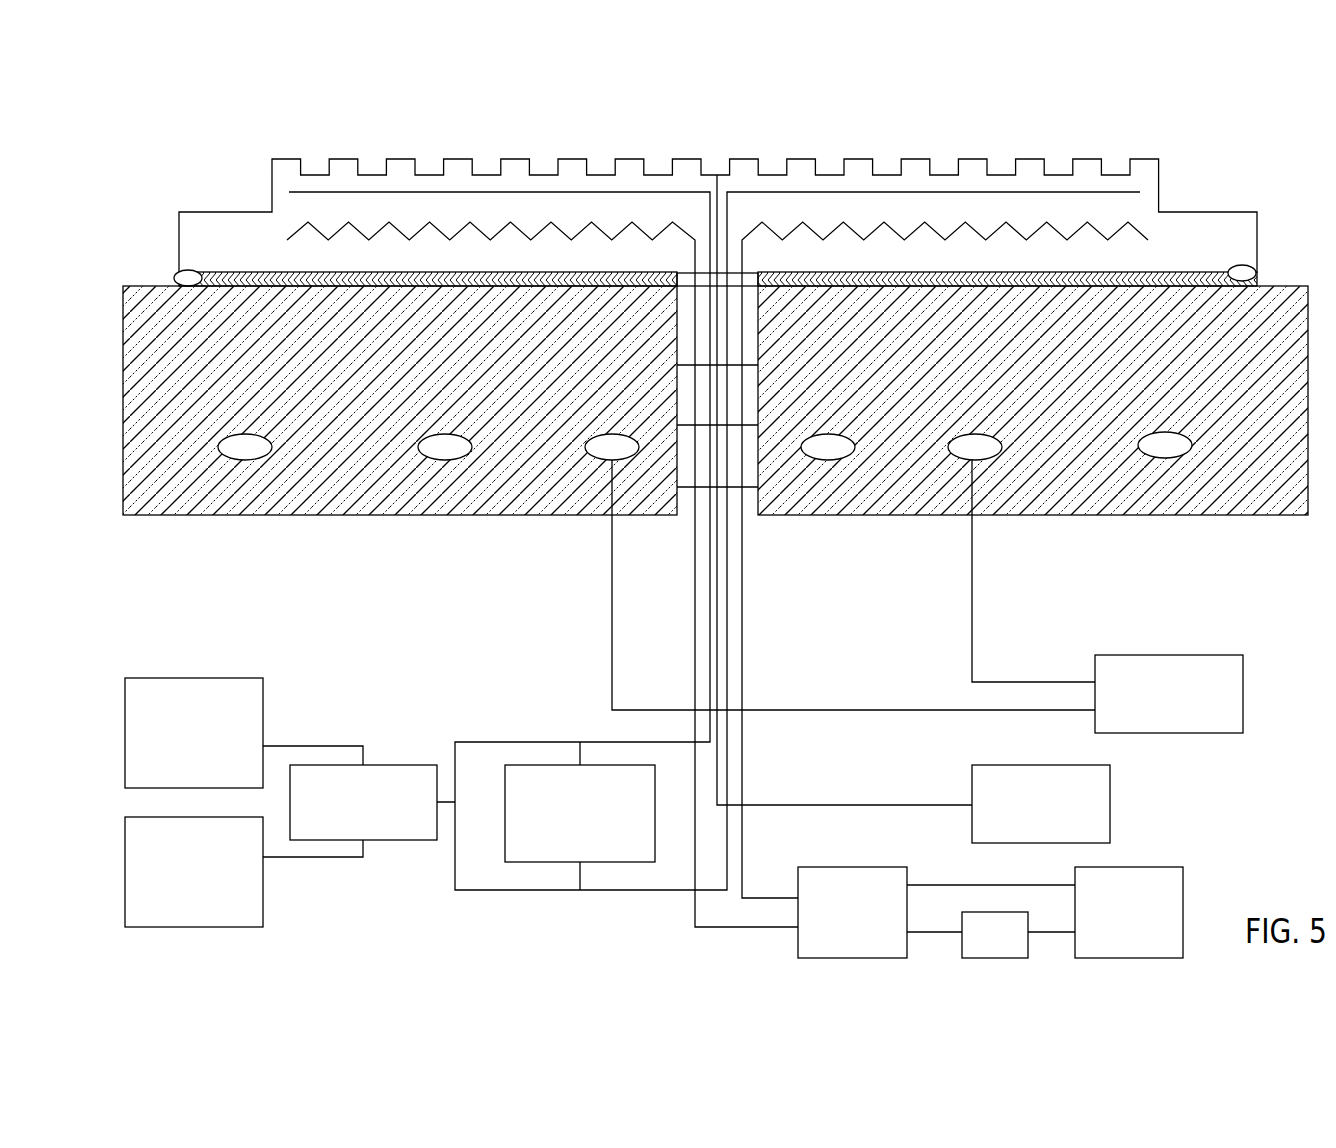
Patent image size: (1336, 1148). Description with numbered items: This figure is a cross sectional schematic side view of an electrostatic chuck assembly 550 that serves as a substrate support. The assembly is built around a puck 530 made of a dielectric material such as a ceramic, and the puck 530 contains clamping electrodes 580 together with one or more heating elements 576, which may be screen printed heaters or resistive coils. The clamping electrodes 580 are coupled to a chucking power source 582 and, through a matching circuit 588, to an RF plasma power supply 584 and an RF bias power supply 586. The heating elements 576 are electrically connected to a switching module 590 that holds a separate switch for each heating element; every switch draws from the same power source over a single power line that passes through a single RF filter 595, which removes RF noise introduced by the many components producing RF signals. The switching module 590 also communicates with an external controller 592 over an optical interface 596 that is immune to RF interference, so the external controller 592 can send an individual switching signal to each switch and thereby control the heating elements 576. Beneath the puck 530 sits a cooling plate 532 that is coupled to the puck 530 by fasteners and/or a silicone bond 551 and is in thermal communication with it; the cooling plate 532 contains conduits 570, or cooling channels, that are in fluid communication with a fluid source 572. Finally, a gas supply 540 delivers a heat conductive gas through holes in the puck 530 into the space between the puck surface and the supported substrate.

The electrostatic chuck assembly 550 is at (168, 88).
The puck 530 is at (150, 218).
The heating elements 576 is at (448, 237).
The clamping electrodes 580 is at (667, 192).
The silicone bond 551 is at (1220, 268).
The cooling plate 532 is at (152, 517).
The conduits 570 is at (1170, 458).
The RF plasma power supply 584 is at (194, 733).
The RF bias power supply 586 is at (194, 872).
The matching circuit 588 is at (363, 802).
The chucking power source 582 is at (580, 813).
The fluid source 572 is at (1169, 694).
The gas supply 540 is at (1041, 804).
The switching module 590 is at (852, 912).
The external controller 592 is at (1129, 912).
The RF filter 595 is at (995, 935).
The optical interface 596 is at (975, 885).